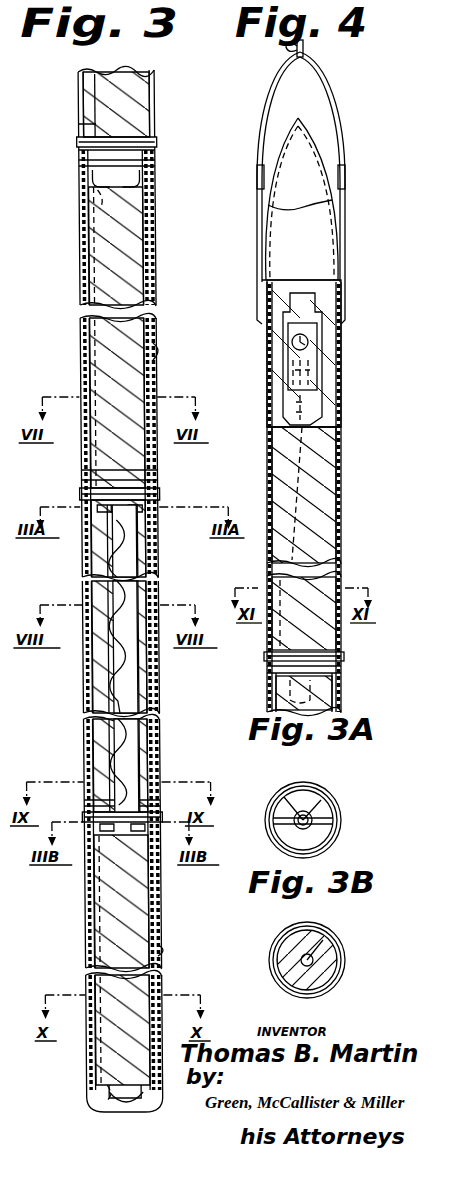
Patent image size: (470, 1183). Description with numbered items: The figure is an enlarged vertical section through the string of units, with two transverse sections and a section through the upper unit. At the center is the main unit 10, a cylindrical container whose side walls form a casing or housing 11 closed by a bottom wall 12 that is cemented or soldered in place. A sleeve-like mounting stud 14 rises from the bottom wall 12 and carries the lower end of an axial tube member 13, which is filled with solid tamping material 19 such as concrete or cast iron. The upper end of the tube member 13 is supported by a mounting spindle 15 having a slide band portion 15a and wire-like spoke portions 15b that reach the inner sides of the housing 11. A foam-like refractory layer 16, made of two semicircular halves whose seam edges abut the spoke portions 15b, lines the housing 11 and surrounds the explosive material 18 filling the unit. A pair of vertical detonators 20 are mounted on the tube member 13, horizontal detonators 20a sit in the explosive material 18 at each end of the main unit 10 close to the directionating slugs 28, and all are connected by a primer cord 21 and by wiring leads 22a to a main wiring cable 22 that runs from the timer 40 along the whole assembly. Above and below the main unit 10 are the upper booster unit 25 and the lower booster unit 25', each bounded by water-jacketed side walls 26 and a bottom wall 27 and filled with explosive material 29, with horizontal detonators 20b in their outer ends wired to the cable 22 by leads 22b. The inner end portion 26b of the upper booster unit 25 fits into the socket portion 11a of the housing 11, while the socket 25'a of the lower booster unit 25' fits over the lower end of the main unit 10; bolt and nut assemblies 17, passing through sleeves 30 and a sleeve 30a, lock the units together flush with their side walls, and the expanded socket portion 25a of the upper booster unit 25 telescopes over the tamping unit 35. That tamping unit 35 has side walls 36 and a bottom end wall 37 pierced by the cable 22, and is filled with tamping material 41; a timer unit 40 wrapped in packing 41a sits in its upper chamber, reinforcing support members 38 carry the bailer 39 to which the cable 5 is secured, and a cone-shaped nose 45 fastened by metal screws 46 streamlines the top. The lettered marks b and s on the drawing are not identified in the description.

In FIG. 4, the cable 5 is at (294, 55).
In FIG. 3, the main or central unit 10 is at (194, 576).
In FIG. 3A, the main or central unit 10 is at (280, 850).
In FIG. 3B, the main or central unit 10 is at (285, 994).
In FIG. 3, the casing or housing 11 is at (155, 548).
In FIG. 3, the socket portion 11a is at (155, 478).
In FIG. 3, the bottom wall 12 is at (135, 855).
In FIG. 3, the central or axial tube member 13 is at (135, 660).
In FIG. 3A, the central or axial tube member 13 is at (309, 812).
In FIG. 3B, the central or axial tube member 13 is at (302, 956).
In FIG. 3, the mounting stud 14 is at (95, 880).
In FIG. 3B, the mounting stud 14 is at (323, 940).
In FIG. 3, the mounting spindle 15 is at (234, 500).
In FIG. 3A, the mounting spindle 15 is at (303, 812).
In FIG. 3A, the slide band portion 15a is at (284, 797).
In FIG. 3A, the spoke portions 15b is at (274, 812).
In FIG. 3, the foam-like refractory body or layer 16 is at (148, 700).
In FIG. 3A, the foam-like refractory body or layer 16 is at (338, 832).
In FIG. 3B, the foam-like refractory body or layer 16 is at (340, 972).
In FIG. 3, the bolt and nut assemblies 17 is at (156, 146).
In FIG. 4, the bolt and nut assemblies 17 is at (344, 656).
In FIG. 3, the explosive material 18 is at (135, 740).
In FIG. 3A, the explosive material 18 is at (290, 833).
In FIG. 3B, the explosive material 18 is at (290, 970).
In FIG. 3, the solid mass tamping material 19 is at (94, 597).
In FIG. 3A, the solid mass tamping material 19 is at (321, 800).
In FIG. 3, the vertical detonators 20 is at (137, 623).
In FIG. 3, the horizontal detonators 20a is at (137, 514).
In FIG. 3, the horizontal detonators 20b is at (93, 178).
In FIG. 3, the primer cord 21 is at (120, 690).
In FIG. 3, the main wiring cable 22 is at (96, 86).
In FIG. 4, the main wiring cable 22 is at (272, 592).
In FIG. 3, the wiring leads 22a is at (100, 555).
In FIG. 3, the wiring leads 22b is at (100, 195).
In FIG. 4, the wiring leads 22b is at (268, 692).
In FIG. 3, the upper supplementary or booster unit 25 is at (147, 589).
In FIG. 4, the upper supplementary or booster unit 25 is at (326, 694).
In FIG. 3, the expanded mouth or socket portion 25a is at (156, 156).
In FIG. 4, the expanded mouth or socket portion 25a is at (342, 642).
In FIG. 3, the lower supplementary or booster unit 25' is at (189, 910).
In FIG. 3A, the expanded mouth or socket 25'a is at (331, 826).
In FIG. 3B, the expanded mouth or socket 25'a is at (323, 972).
In FIG. 3, the water-jacketed side walls 26 is at (155, 360).
In FIG. 4, the water-jacketed side walls 26 is at (340, 710).
In FIG. 3, the inner end portion 26b is at (155, 462).
In FIG. 3, the bottom wall 27 is at (130, 496).
In FIG. 3, the directionating element or slug 28 is at (99, 495).
In FIG. 3, the explosive material 29 is at (107, 245).
In FIG. 4, the explosive material 29 is at (274, 706).
In FIG. 3, the sleeves 30 is at (102, 470).
In FIG. 3, the sleeve 30a is at (77, 124).
In FIG. 4, the sleeve 30a is at (267, 656).
In FIG. 3, the upper tamping unit 35 is at (202, 109).
In FIG. 4, the upper tamping unit 35 is at (384, 512).
In FIG. 3, the side walls 36 is at (153, 120).
In FIG. 4, the side walls 36 is at (341, 405).
In FIG. 4, the bottom end wall 37 is at (330, 668).
In FIG. 4, the reinforcing support members 38 is at (259, 210).
In FIG. 4, the bailer 39 is at (338, 100).
In FIG. 4, the timer unit 40 is at (320, 346).
In FIG. 3, the solid mass tamping material 41 is at (129, 96).
In FIG. 4, the solid mass tamping material 41 is at (318, 540).
In FIG. 4, the packing 41a is at (322, 370).
In FIG. 4, the cone-shaped nose 45 is at (287, 135).
In FIG. 4, the metal screws 46 is at (318, 282).
In FIG. 3, the section mark b is at (77, 522).
In FIG. 3, the slot s is at (155, 1112).